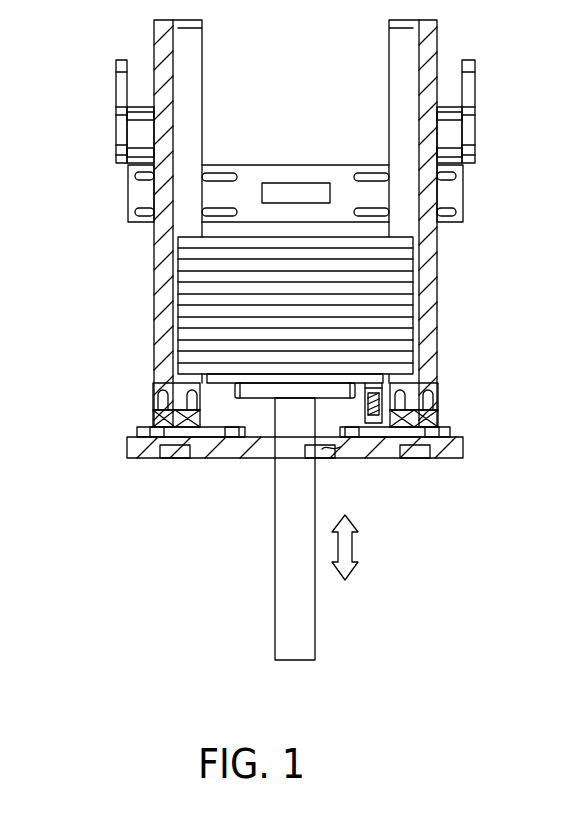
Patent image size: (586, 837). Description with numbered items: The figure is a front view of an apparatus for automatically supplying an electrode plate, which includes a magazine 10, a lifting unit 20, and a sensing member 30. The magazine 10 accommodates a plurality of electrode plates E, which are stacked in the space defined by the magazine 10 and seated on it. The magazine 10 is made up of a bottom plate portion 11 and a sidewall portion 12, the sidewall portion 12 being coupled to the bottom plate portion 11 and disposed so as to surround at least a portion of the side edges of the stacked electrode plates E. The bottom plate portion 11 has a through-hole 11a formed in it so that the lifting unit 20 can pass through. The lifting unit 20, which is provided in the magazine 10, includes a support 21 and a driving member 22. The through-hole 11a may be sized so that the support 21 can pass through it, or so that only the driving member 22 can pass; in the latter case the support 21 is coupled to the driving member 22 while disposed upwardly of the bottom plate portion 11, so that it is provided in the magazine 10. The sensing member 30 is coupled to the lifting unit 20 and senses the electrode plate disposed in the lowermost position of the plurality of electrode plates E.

The magazine 10 is at (70, 283).
The bottom plate portion 11 is at (158, 400).
The through-hole 11a is at (334, 453).
The sidewall portion 12 is at (160, 283).
The lifting unit 20 is at (70, 478).
The support 21 is at (260, 458).
The driving member 22 is at (287, 537).
The sensing member 30 is at (438, 407).
The electrode plate E is at (413, 291).